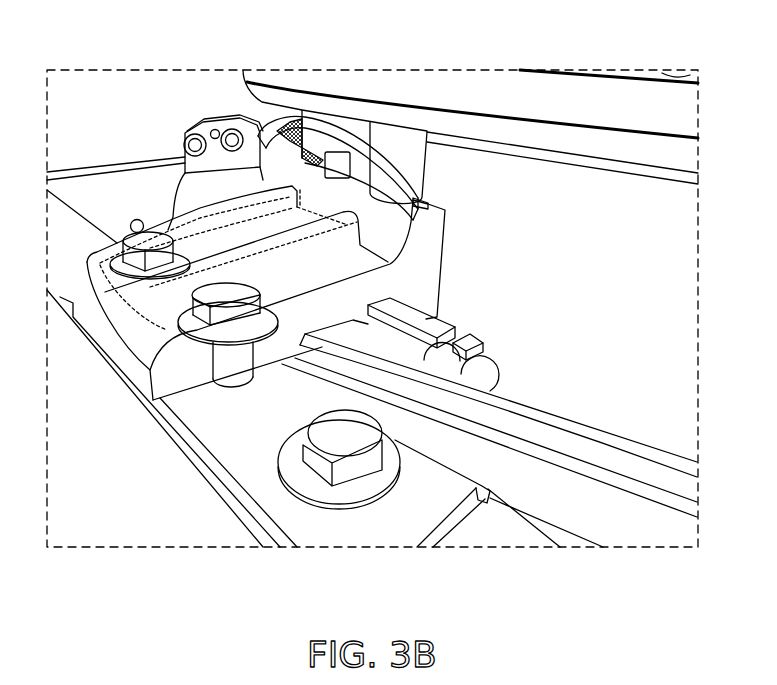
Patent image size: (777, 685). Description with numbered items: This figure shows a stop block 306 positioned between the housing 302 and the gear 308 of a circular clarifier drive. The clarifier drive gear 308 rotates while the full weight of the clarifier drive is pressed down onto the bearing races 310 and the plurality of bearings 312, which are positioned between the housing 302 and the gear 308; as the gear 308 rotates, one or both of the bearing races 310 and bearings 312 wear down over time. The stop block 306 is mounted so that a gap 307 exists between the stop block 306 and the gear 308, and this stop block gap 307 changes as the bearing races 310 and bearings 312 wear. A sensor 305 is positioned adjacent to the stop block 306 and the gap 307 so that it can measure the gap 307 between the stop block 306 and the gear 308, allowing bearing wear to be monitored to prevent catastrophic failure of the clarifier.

The housing 302 is at (622, 207).
The sensor 305 is at (337, 150).
The stop block 306 is at (393, 145).
The gap 307 is at (428, 204).
The clarifier drive gear 308 is at (527, 475).
The bearing races 310 is at (438, 323).
The bearings 312 is at (487, 366).